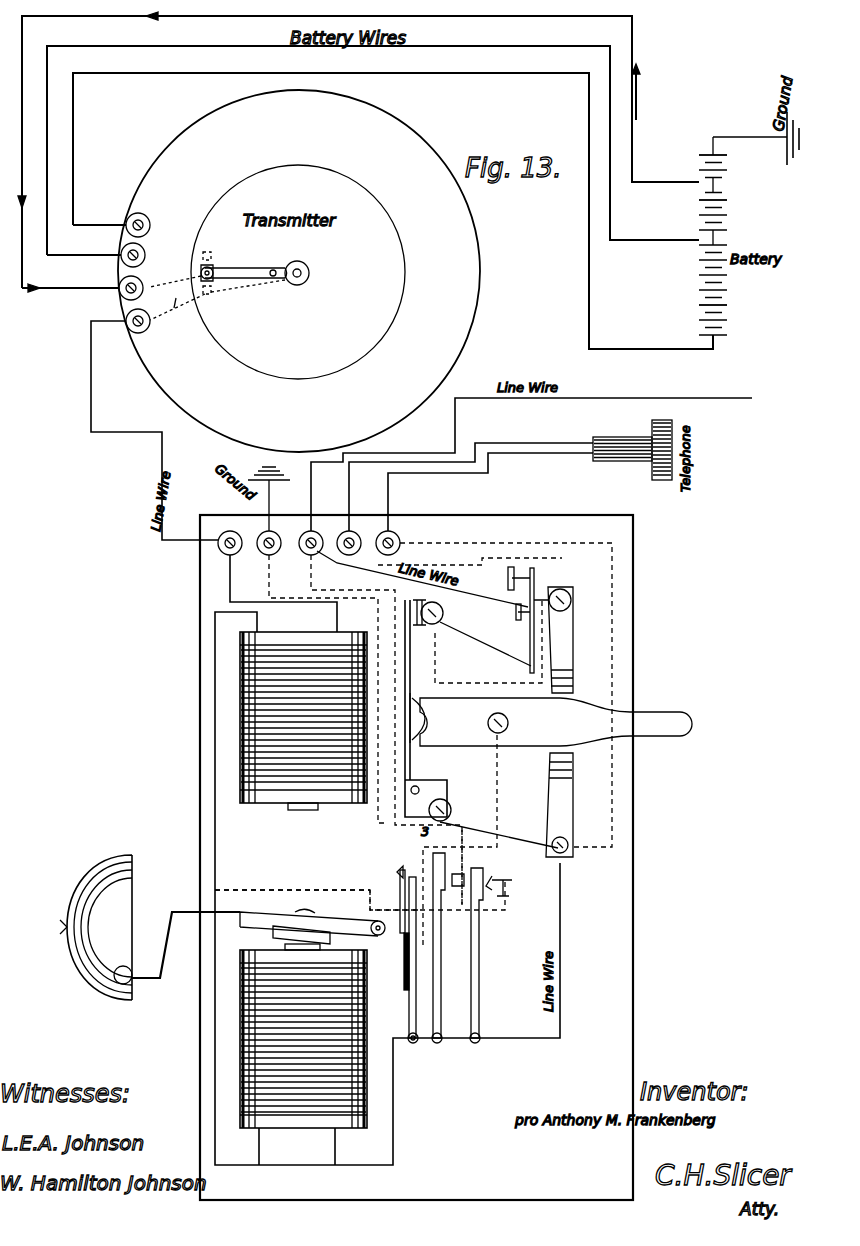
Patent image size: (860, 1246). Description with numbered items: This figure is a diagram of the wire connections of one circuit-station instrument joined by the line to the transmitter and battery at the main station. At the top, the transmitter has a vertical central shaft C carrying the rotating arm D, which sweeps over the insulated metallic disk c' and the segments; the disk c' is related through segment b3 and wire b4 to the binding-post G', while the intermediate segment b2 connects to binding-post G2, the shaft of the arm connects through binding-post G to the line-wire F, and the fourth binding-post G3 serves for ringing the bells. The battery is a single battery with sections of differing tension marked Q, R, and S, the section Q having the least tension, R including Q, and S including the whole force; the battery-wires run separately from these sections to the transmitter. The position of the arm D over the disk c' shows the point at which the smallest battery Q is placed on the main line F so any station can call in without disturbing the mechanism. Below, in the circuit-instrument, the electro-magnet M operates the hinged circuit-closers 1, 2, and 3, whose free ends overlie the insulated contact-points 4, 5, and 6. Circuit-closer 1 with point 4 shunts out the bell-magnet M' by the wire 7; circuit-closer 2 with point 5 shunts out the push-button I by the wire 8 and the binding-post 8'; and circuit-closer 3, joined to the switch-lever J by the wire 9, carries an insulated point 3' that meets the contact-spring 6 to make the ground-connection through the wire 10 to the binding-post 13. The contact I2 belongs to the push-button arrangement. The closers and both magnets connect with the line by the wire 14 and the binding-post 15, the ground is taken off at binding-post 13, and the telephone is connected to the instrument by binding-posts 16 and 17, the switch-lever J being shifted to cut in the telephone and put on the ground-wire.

The vertical central shaft C is at (304, 270).
The rotating arm D is at (244, 265).
The intermediate segment b2 is at (217, 304).
The metallic segment b3 is at (213, 245).
The wire b4 is at (175, 278).
The metallic insulated disk c' is at (225, 252).
The binding-post G is at (82, 288).
The binding-post G' is at (140, 327).
The binding-post G2 is at (103, 252).
The binding-post G3 is at (118, 221).
The battery section Q is at (722, 165).
The battery section R is at (721, 207).
The battery section S is at (721, 311).
The line-wire F is at (421, 430).
The push-button I is at (432, 612).
The contact I2 is at (408, 681).
The switch-lever J is at (556, 720).
The circuit-closer 1 is at (490, 952).
The circuit-closer 2 is at (442, 948).
The circuit-closer 3 is at (418, 960).
The insulated point 3' is at (399, 924).
The insulated contact-point 4 is at (499, 879).
The insulated contact-point 5 is at (456, 887).
The insulated contact-point or spring 6 is at (395, 899).
The wire-connection 7 is at (292, 882).
The wire 8 is at (386, 730).
The binding-post 8' is at (311, 536).
The wire 9 is at (464, 841).
The ground-wire 10 is at (328, 689).
The binding-post 13 is at (275, 537).
The wire 14 is at (380, 888).
The binding-post 15 is at (230, 537).
The binding-post 16 is at (354, 537).
The binding-post 17 is at (393, 537).
The electro-magnet M is at (303, 721).
The bell-magnet M' is at (303, 1054).